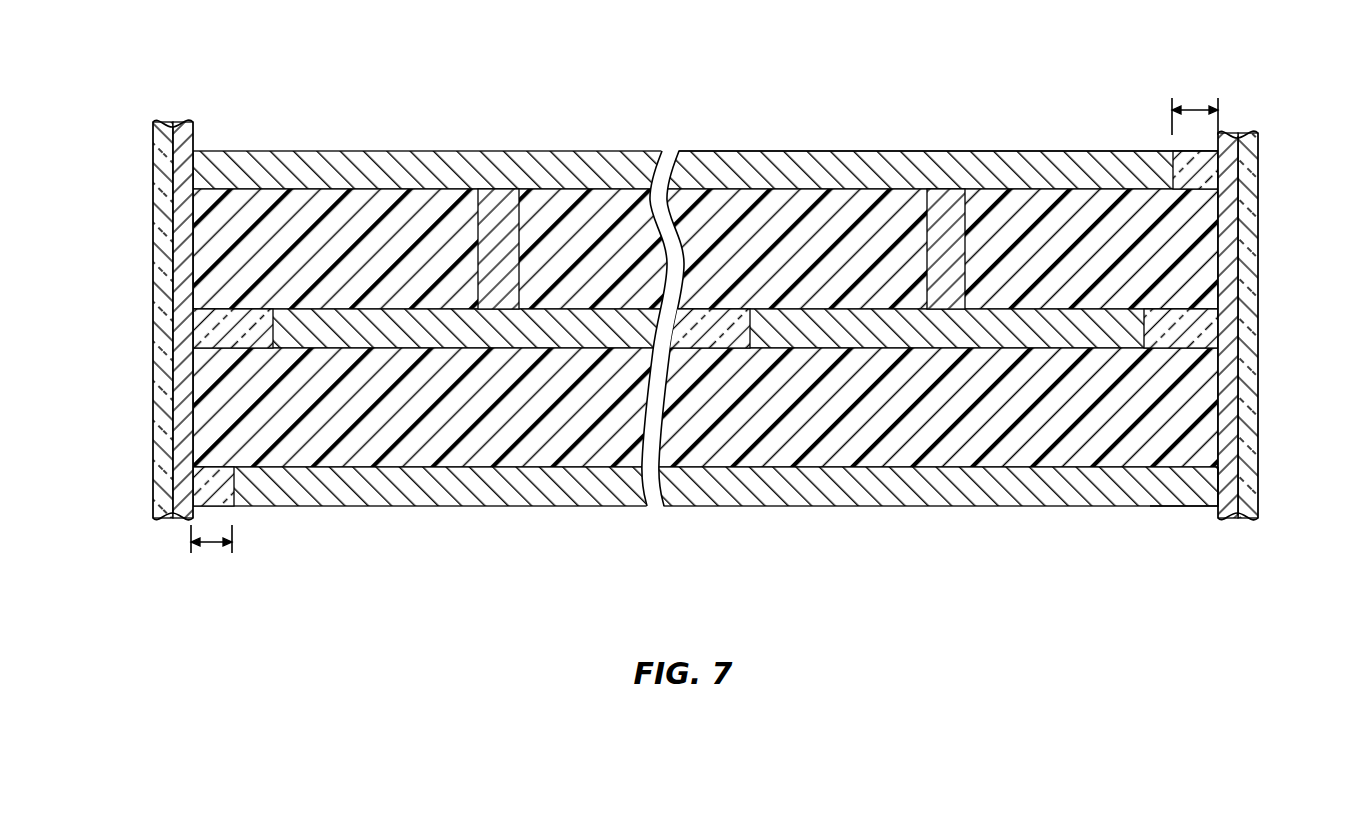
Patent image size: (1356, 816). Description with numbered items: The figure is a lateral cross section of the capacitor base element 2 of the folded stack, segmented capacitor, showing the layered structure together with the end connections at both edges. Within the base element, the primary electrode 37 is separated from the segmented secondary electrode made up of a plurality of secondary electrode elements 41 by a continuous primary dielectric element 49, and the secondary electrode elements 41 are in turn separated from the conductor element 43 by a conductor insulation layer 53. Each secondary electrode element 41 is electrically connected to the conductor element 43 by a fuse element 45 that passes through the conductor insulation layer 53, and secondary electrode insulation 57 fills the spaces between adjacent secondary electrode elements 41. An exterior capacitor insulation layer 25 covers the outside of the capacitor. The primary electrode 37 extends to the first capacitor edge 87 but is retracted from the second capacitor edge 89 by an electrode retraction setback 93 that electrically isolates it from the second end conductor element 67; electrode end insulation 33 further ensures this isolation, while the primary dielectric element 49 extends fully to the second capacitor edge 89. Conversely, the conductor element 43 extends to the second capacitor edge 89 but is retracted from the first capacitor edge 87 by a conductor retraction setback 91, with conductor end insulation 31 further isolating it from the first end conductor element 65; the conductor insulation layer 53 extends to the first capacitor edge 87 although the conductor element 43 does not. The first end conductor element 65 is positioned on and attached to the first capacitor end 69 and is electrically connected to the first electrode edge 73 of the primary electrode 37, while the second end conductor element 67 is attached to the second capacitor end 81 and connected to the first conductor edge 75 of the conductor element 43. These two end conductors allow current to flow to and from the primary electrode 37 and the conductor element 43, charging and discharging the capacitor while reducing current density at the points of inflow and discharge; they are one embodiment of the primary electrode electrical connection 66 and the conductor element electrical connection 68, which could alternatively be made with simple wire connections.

The capacitor base element 2 is at (848, 151).
The exterior capacitor insulation layer 25 is at (153, 187).
The conductor end insulation 31 is at (1193, 150).
The electrode end insulation 33 is at (220, 490).
The primary electrode 37 is at (443, 507).
The secondary electrode elements 41 is at (502, 350).
The conductor element 43 is at (553, 151).
The fuse element 45 is at (477, 236).
The primary dielectric element 49 is at (873, 405).
The conductor insulation layer 53 is at (722, 225).
The secondary electrode insulation 57 is at (223, 337).
The first end conductor element 65 is at (1222, 332).
The primary electrode electrical connection 66 is at (1207, 488).
The second end conductor element 67 is at (180, 250).
The conductor element electrical connection 68 is at (198, 178).
The first capacitor end 69 is at (1228, 388).
The first electrode edge 73 is at (1228, 473).
The first conductor edge 75 is at (196, 162).
The second capacitor end 81 is at (180, 372).
The first capacitor edge 87 is at (1218, 497).
The second capacitor edge 89 is at (178, 490).
The conductor retraction setback 91 is at (1196, 104).
The electrode retraction setback 93 is at (213, 548).